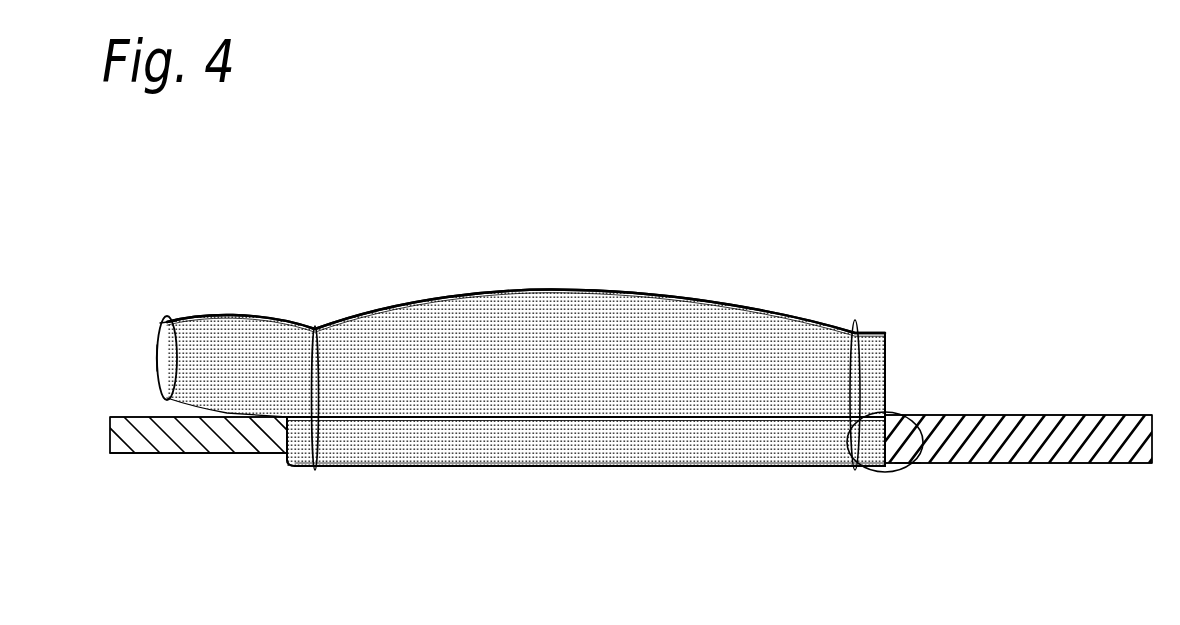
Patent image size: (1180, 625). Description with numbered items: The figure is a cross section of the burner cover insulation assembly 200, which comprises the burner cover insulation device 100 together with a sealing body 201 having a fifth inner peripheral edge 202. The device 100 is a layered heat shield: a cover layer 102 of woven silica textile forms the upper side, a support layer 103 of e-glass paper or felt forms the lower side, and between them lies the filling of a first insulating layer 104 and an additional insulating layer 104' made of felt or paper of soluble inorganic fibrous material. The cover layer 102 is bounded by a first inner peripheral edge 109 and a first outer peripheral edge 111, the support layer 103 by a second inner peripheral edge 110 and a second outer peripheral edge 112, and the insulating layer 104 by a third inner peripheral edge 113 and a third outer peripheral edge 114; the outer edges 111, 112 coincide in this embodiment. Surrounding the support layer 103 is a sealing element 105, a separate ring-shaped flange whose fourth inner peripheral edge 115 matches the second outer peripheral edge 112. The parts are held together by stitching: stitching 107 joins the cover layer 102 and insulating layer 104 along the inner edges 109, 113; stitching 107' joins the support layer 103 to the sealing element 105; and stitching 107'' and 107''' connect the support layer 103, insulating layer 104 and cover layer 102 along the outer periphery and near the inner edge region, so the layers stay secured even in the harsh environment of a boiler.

The burner cover insulation device 100 is at (732, 278).
The burner cover insulation assembly 200 is at (571, 198).
The cover layer 102 is at (392, 308).
The support layer 103 is at (378, 446).
The insulating layer 104 is at (526, 325).
The additional insulating layer 104' is at (586, 481).
The sealing element 105 is at (1062, 447).
The stitching 107 is at (150, 325).
The stitching 107' is at (904, 416).
The stitching 107'' is at (845, 365).
The stitching 107''' is at (306, 360).
The first inner peripheral edge of cover layer 109 is at (158, 331).
The second inner peripheral edge of support layer 110 is at (287, 460).
The first outer peripheral edge of cover layer 111 is at (886, 335).
The second outer peripheral edge of support layer 112 is at (872, 473).
The third inner peripheral edge of insulating layer 113 is at (157, 357).
The third outer peripheral edge of insulating layer 114 is at (886, 368).
The fourth inner peripheral edge of sealing element 115 is at (907, 464).
The sealing body 201 is at (193, 465).
The fifth inner peripheral edge of sealing body 202 is at (109, 436).